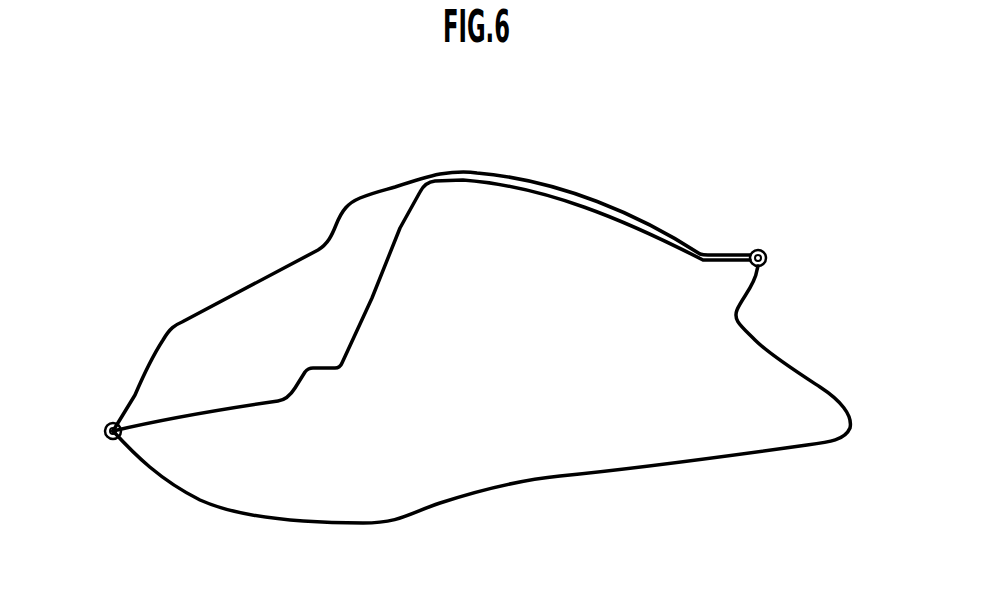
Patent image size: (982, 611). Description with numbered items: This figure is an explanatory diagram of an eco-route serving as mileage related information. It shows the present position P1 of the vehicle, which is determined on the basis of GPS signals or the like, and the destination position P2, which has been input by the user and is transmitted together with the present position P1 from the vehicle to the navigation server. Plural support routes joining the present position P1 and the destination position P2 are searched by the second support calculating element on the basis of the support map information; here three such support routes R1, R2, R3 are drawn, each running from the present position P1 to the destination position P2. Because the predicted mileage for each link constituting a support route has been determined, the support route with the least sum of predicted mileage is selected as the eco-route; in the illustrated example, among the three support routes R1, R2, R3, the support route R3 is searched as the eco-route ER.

The support route R1 is at (327, 207).
The support route R2 is at (379, 301).
The support route R3 is at (560, 493).
The present position P1 is at (100, 413).
The destination position P2 is at (773, 242).